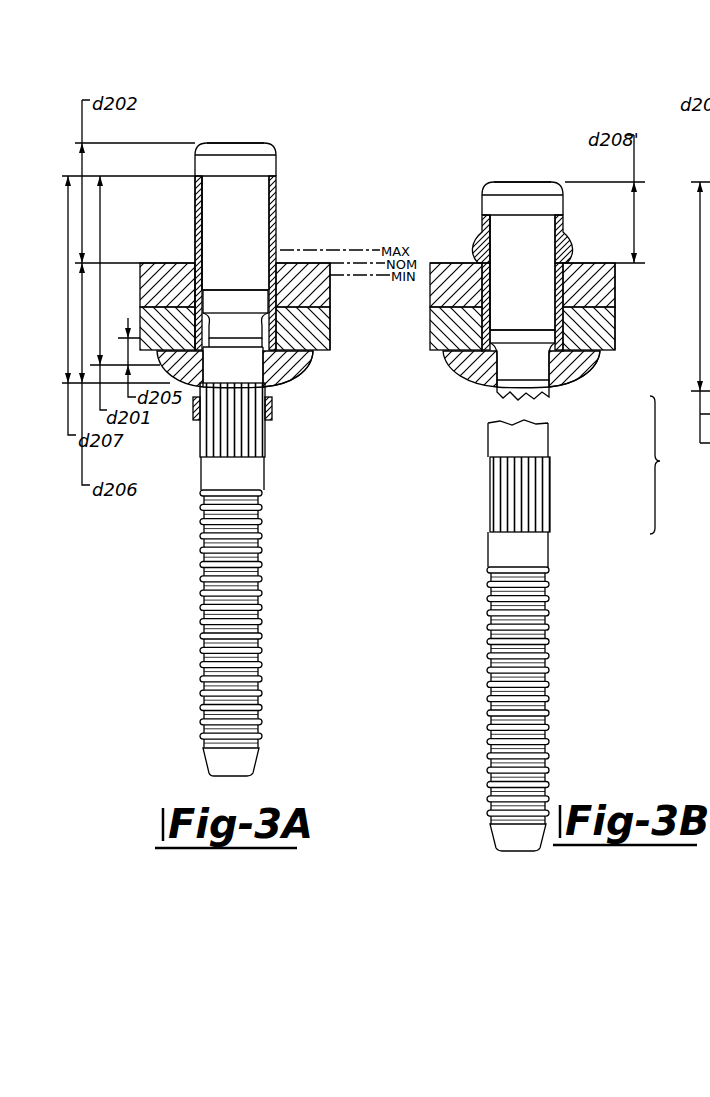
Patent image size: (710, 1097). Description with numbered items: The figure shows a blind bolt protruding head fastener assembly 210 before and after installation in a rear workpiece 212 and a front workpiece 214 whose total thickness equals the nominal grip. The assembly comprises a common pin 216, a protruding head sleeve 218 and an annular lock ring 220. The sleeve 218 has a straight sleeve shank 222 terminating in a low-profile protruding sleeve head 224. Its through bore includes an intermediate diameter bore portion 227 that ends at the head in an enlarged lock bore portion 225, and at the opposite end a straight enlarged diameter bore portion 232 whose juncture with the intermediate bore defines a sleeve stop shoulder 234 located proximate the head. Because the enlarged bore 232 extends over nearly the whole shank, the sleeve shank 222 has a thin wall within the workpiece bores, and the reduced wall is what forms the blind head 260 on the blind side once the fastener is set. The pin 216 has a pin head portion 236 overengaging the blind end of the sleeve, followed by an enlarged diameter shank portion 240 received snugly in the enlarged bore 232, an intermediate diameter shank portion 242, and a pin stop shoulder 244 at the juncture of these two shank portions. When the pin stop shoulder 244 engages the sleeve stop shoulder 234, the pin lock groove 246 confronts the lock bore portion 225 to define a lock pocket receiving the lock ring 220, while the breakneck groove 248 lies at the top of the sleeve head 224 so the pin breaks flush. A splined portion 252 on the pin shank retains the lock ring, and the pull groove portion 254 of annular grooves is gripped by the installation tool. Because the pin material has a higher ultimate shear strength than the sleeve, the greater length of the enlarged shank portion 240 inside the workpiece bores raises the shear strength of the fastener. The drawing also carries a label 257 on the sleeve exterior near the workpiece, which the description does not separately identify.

In FIG. 3A, the protruding head fastener assembly 210 is at (237, 435).
In FIG. 3B, the protruding head fastener assembly 210 is at (532, 500).
In FIG. 3A, the rear workpiece 212 is at (152, 268).
In FIG. 3B, the rear workpiece 212 is at (440, 302).
In FIG. 3A, the front workpiece 214 is at (150, 311).
In FIG. 3B, the front workpiece 214 is at (440, 340).
In FIG. 3A, the pin 216 is at (280, 151).
In FIG. 3B, the pin 216 is at (516, 179).
In FIG. 3A, the protruding head sleeve 218 is at (278, 192).
In FIG. 3B, the protruding head sleeve 218 is at (563, 216).
In FIG. 3A, the lock ring 220 is at (273, 408).
In FIG. 3B, the lock ring 220 is at (478, 397).
In FIG. 3A, the sleeve shank 222 is at (196, 199).
In FIG. 3A, the sleeve head 224 is at (235, 369).
In FIG. 3B, the sleeve head 224 is at (457, 365).
In FIG. 3A, the lock bore portion 225 is at (272, 385).
In FIG. 3B, the lock bore portion 225 is at (546, 393).
In FIG. 3A, the intermediate diameter bore portion 227 is at (306, 364).
In FIG. 3B, the intermediate diameter bore portion 227 is at (600, 357).
In FIG. 3A, the enlarged diameter bore portion 232 is at (203, 214).
In FIG. 3B, the enlarged diameter bore portion 232 is at (490, 269).
In FIG. 3A, the sleeve stop shoulder 234 is at (322, 330).
In FIG. 3B, the sleeve stop shoulder 234 is at (605, 322).
In FIG. 3A, the pin head portion 236 is at (252, 142).
In FIG. 3B, the pin head portion 236 is at (531, 182).
In FIG. 3A, the enlarged diameter shank portion 240 is at (258, 201).
In FIG. 3B, the enlarged diameter shank portion 240 is at (532, 247).
In FIG. 3A, the intermediate diameter shank portion 242 is at (247, 306).
In FIG. 3B, the intermediate diameter shank portion 242 is at (522, 345).
In FIG. 3A, the pin stop shoulder 244 is at (214, 290).
In FIG. 3B, the pin stop shoulder 244 is at (497, 330).
In FIG. 3A, the pin lock groove 246 is at (246, 335).
In FIG. 3B, the pin lock groove 246 is at (532, 377).
In FIG. 3A, the breakneck groove 248 is at (207, 364).
In FIG. 3B, the breakneck groove 248 is at (512, 423).
In FIG. 3A, the splined portion 252 is at (265, 456).
In FIG. 3B, the splined portion 252 is at (550, 498).
In FIG. 3A, the pull groove portion 254 is at (200, 581).
In FIG. 3B, the pull groove portion 254 is at (548, 665).
In FIG. 3A, the sleeve outer surface 257 is at (192, 263).
In FIG. 3B, the sleeve outer surface 257 is at (600, 262).
In FIG. 3B, the blind head 260 is at (480, 246).